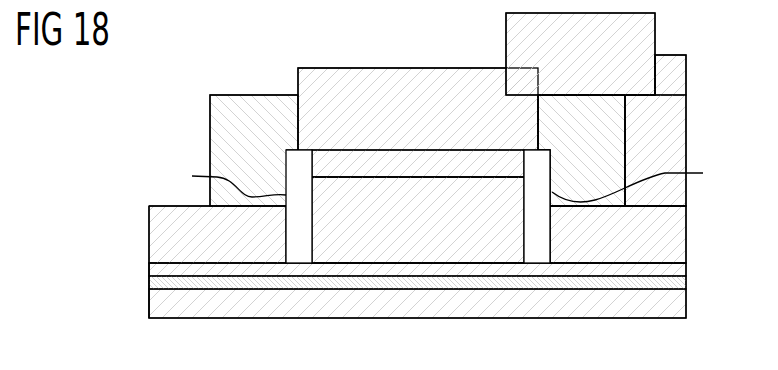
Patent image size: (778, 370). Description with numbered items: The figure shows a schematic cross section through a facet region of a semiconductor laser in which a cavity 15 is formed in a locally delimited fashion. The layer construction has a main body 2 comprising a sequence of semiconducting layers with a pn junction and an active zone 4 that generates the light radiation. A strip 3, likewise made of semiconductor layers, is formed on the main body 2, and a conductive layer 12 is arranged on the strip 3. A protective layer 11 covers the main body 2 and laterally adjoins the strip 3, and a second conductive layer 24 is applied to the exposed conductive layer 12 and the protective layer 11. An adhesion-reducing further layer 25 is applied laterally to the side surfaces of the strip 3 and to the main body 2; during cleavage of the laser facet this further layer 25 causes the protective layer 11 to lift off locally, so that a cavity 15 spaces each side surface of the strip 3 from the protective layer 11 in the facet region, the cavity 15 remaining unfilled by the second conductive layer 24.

The main body 2 is at (147, 263).
The strip 3 is at (413, 248).
The active zone 4 is at (677, 283).
The protective layer 11 is at (225, 136).
The conductive layer 12 is at (354, 163).
The cavity 15 is at (302, 247).
The second conductive layer 24 is at (397, 86).
The further layer 25 is at (448, 180).